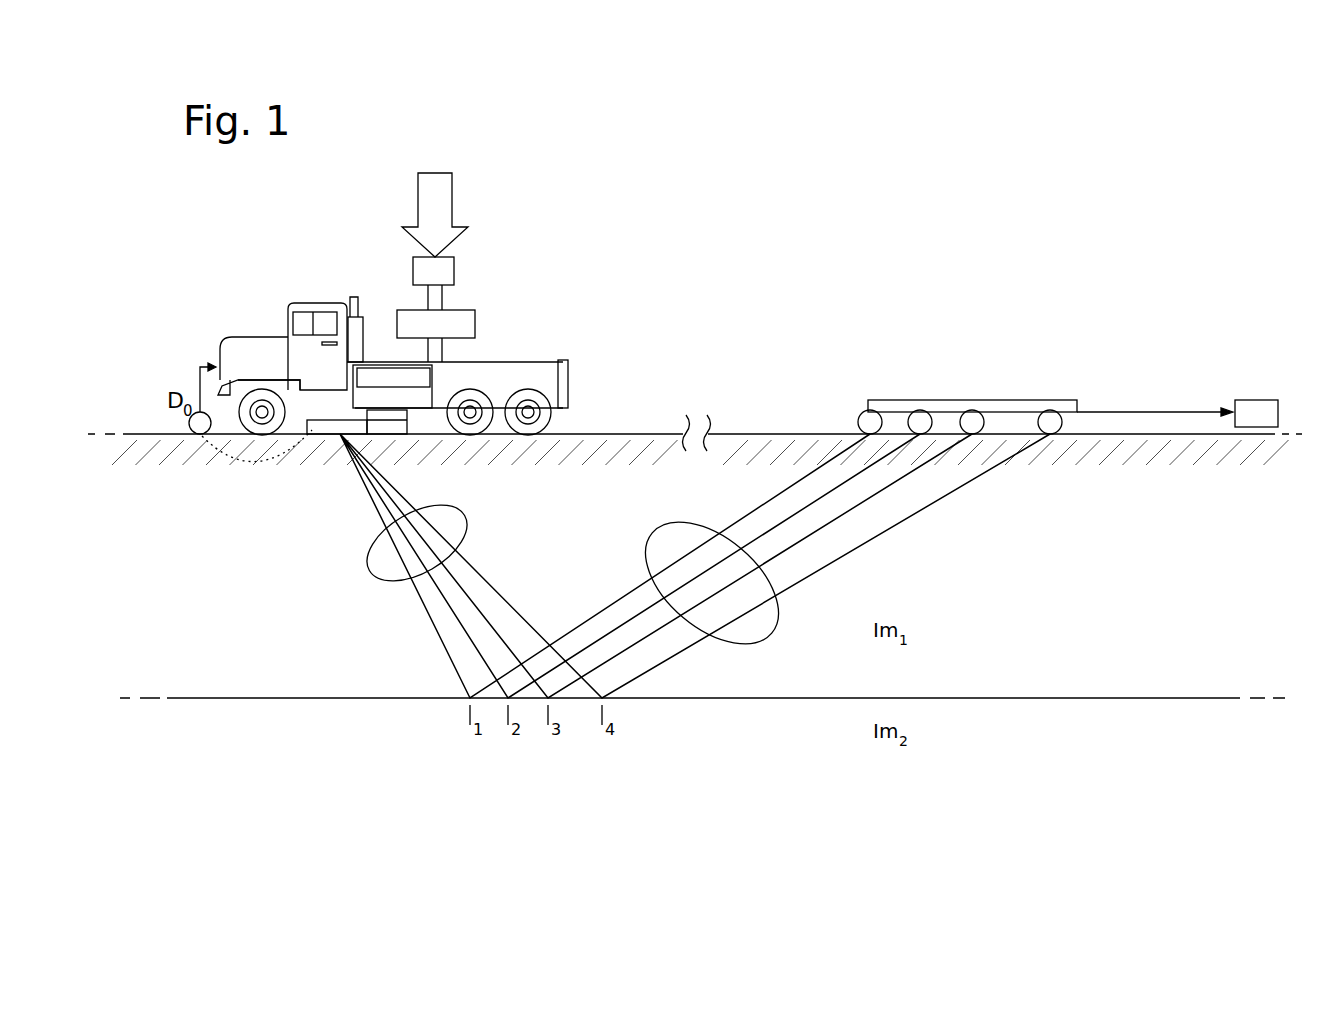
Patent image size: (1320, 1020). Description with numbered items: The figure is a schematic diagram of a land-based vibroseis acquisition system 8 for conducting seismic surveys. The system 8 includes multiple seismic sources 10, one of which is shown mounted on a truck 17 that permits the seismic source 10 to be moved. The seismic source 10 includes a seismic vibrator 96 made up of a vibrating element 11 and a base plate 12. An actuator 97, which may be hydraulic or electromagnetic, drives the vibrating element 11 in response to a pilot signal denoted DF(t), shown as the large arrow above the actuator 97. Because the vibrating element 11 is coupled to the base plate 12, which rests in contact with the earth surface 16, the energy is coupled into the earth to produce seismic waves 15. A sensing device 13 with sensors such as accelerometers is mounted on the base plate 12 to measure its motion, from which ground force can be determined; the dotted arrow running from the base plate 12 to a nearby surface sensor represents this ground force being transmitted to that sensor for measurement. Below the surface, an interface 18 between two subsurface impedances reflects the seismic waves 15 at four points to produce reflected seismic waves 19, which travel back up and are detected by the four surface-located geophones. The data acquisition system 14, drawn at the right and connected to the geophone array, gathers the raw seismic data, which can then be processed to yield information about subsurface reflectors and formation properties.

The vibroseis acquisition system 8 is at (856, 168).
The seismic source 10 is at (471, 241).
The vibrating element 11 is at (466, 310).
The base plate 12 is at (316, 435).
The sensing device 13 is at (390, 437).
The data acquisition system 14 is at (1254, 400).
The seismic waves 15 is at (368, 575).
The earth surface 16 is at (146, 433).
The truck 17 is at (320, 303).
The interface 18 is at (1100, 698).
The reflected seismic waves 19 is at (770, 628).
The seismic vibrator 96 is at (486, 346).
The actuator 97 is at (455, 270).